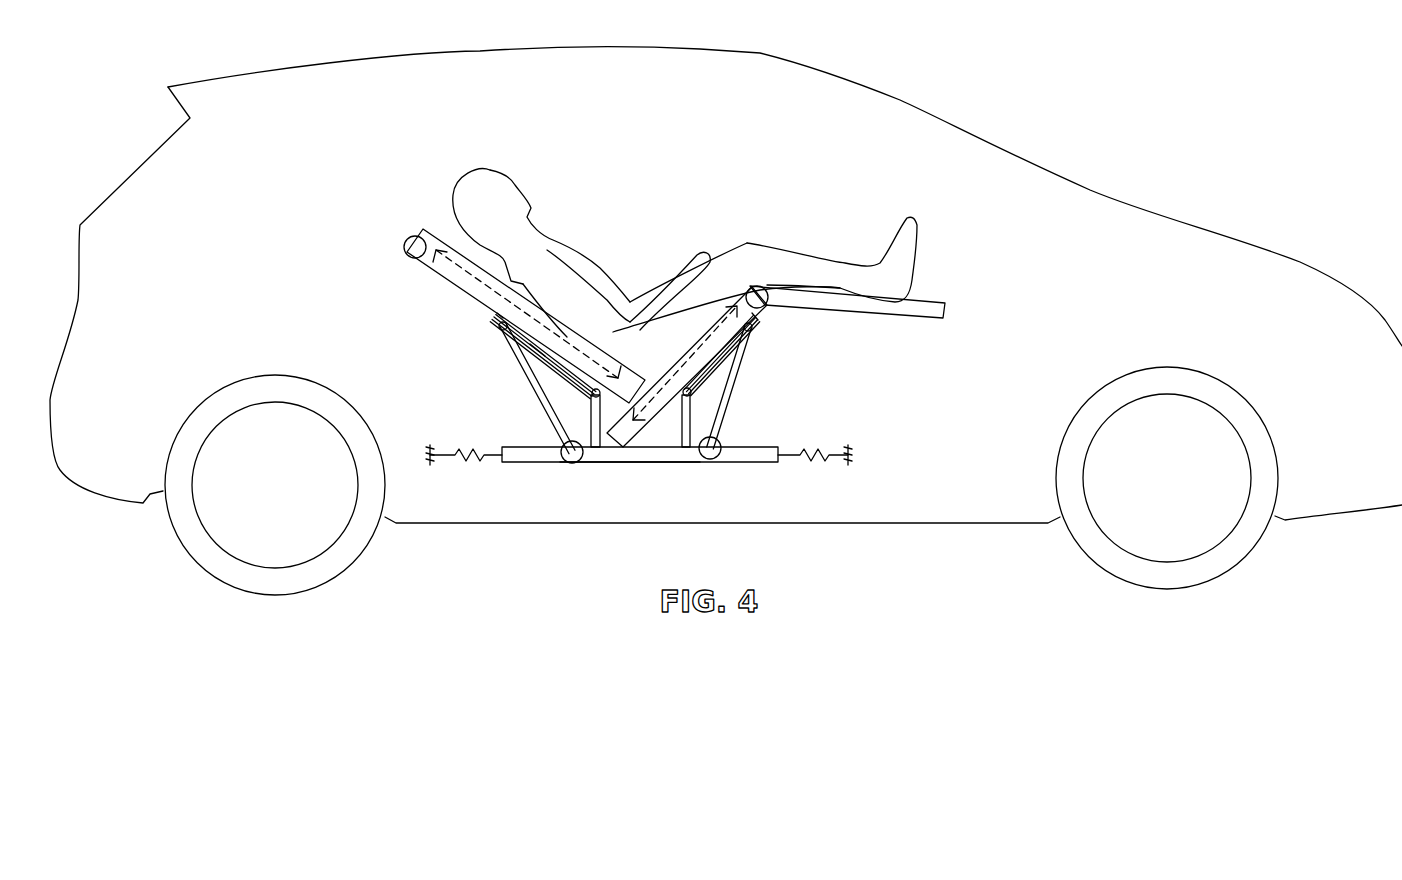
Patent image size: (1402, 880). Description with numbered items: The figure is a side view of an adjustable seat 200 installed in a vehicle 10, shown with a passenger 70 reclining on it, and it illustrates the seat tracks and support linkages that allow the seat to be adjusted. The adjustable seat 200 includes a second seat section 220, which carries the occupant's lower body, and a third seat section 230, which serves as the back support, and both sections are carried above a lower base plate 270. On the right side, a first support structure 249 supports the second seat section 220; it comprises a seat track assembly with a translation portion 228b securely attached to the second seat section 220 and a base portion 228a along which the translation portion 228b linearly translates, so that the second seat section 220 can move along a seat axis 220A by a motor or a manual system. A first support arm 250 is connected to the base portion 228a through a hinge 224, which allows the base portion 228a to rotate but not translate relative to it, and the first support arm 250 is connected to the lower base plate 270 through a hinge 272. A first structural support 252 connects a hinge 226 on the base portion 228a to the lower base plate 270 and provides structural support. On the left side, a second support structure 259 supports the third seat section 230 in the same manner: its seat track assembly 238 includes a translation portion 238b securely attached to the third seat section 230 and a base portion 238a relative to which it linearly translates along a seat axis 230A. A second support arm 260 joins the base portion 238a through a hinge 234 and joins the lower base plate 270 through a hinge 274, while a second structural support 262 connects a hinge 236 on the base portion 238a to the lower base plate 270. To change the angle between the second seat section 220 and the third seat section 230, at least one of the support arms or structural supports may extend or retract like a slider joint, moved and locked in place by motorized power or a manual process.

The vehicle 10 is at (762, 53).
The passenger 70 is at (490, 170).
The adjustable seat 200 is at (373, 146).
The second seat section 220 is at (687, 367).
The seat axis 220A is at (713, 337).
The hinge 224 is at (750, 325).
The hinge 226 is at (700, 393).
The base portion 228a is at (733, 347).
The translation portion 228b is at (680, 286).
The third seat section 230 is at (431, 229).
The seat axis 230A is at (545, 326).
The hinge 234 is at (503, 337).
The hinge 236 is at (590, 396).
The seat track assembly 238 is at (480, 304).
The base portion 238a is at (535, 350).
The translation portion 238b is at (601, 300).
The first support structure 249 is at (745, 395).
The first support arm 250 is at (742, 370).
The first structural support 252 is at (699, 462).
The second support structure 259 is at (512, 402).
The second support arm 260 is at (553, 413).
The second structural support 262 is at (620, 463).
The lower base plate 270 is at (640, 463).
The hinge 272 is at (716, 460).
The hinge 274 is at (576, 463).